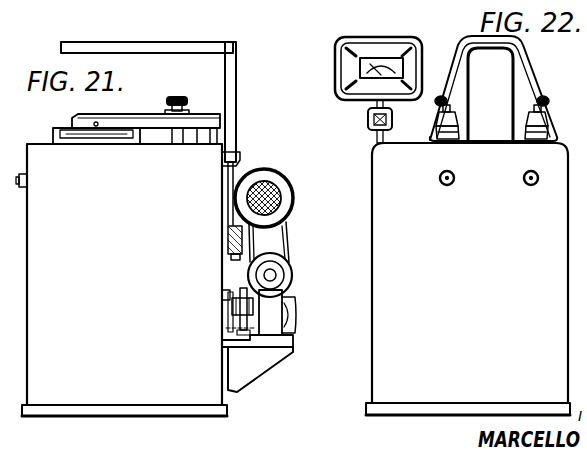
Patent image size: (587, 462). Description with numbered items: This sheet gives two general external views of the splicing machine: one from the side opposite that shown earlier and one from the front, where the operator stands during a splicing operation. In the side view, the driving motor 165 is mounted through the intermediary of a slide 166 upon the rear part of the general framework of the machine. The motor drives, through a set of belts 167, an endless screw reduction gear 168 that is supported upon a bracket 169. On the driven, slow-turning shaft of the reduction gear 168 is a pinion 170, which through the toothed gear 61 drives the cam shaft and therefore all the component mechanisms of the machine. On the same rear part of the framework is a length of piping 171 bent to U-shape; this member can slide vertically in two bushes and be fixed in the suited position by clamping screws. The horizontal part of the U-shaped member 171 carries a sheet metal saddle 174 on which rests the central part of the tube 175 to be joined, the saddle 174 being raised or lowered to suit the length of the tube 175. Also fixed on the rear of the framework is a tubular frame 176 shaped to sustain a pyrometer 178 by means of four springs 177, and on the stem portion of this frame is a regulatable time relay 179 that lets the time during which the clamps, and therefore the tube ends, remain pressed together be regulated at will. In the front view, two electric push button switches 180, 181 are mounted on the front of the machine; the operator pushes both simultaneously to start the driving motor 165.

In FIG. 21, the toothed gear 61 is at (247, 292).
In FIG. 21, the driving motor 165 is at (288, 190).
In FIG. 21, the slide 166 is at (233, 160).
In FIG. 21, the set of belts 167 is at (287, 242).
In FIG. 21, the endless screw reduction gear 168 is at (288, 310).
In FIG. 21, the bracket 169 is at (258, 363).
In FIG. 21, the pinion 170 is at (243, 306).
In FIG. 21, the U-shaped piping member 171 is at (236, 97).
In FIG. 22, the U-shaped piping member 171 is at (521, 58).
In FIG. 21, the sheet metal saddle 174 is at (135, 47).
In FIG. 22, the tube 175 is at (534, 88).
In FIG. 22, the tubular frame 176 is at (370, 98).
In FIG. 22, the springs 177 is at (356, 50).
In FIG. 22, the pyrometer 178 is at (380, 62).
In FIG. 22, the regulatable time relay 179 is at (368, 118).
In FIG. 22, the electric push button switch 180 is at (450, 185).
In FIG. 22, the electric push button switch 181 is at (532, 185).